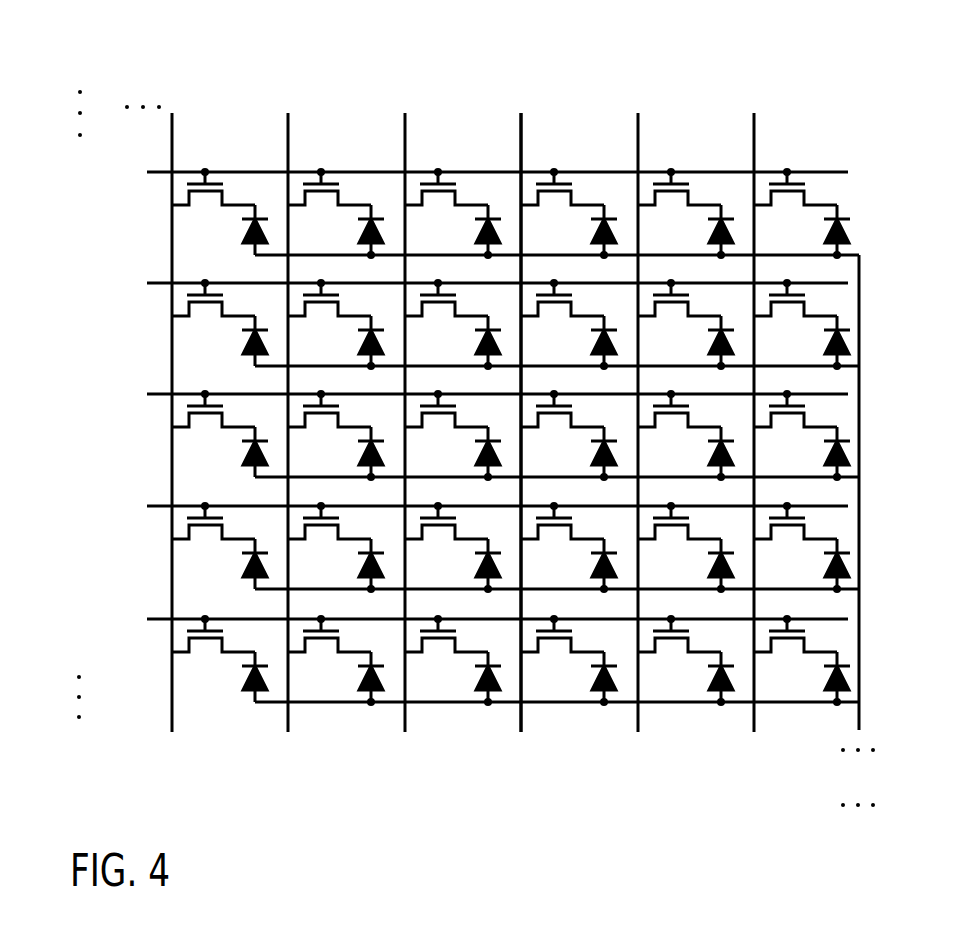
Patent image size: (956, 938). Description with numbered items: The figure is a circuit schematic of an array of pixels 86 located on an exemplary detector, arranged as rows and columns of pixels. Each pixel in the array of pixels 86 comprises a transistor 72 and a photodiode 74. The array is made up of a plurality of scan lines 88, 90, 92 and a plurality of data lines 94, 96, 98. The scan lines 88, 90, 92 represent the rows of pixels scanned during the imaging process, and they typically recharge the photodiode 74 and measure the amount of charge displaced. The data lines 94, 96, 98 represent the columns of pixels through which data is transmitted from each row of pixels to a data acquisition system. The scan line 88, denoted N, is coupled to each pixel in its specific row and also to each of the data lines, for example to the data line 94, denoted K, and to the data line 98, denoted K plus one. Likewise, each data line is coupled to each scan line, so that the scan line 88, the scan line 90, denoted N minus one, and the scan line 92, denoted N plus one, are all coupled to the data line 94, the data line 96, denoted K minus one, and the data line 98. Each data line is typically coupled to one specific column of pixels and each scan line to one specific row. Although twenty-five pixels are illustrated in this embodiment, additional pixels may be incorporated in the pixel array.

The array of pixels 86 is at (411, 86).
The transistor 72 is at (192, 180).
The photodiode 74 is at (257, 213).
The scan line 88 is at (60, 418).
The scan line 90 is at (57, 303).
The scan line 92 is at (45, 530).
The data line 94 is at (406, 826).
The data line 96 is at (288, 826).
The data line 98 is at (524, 826).